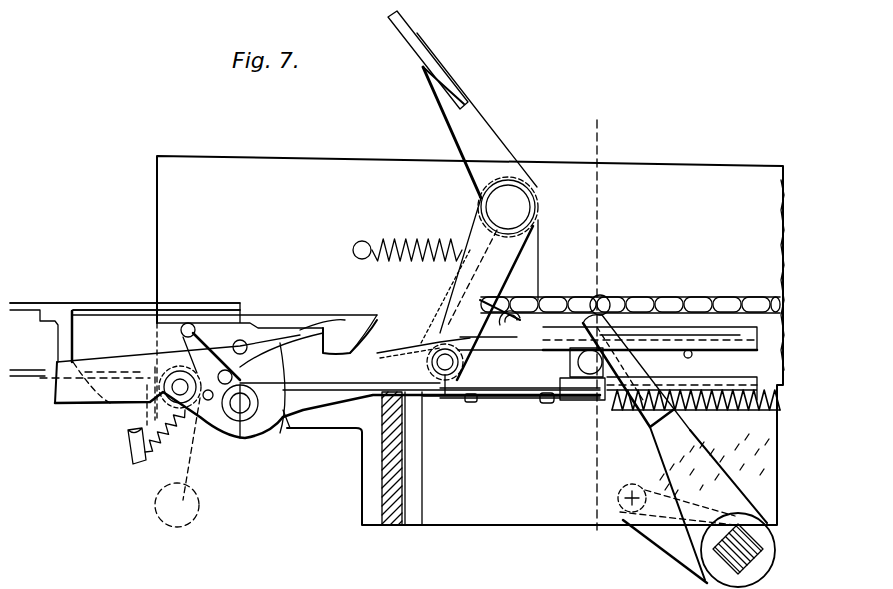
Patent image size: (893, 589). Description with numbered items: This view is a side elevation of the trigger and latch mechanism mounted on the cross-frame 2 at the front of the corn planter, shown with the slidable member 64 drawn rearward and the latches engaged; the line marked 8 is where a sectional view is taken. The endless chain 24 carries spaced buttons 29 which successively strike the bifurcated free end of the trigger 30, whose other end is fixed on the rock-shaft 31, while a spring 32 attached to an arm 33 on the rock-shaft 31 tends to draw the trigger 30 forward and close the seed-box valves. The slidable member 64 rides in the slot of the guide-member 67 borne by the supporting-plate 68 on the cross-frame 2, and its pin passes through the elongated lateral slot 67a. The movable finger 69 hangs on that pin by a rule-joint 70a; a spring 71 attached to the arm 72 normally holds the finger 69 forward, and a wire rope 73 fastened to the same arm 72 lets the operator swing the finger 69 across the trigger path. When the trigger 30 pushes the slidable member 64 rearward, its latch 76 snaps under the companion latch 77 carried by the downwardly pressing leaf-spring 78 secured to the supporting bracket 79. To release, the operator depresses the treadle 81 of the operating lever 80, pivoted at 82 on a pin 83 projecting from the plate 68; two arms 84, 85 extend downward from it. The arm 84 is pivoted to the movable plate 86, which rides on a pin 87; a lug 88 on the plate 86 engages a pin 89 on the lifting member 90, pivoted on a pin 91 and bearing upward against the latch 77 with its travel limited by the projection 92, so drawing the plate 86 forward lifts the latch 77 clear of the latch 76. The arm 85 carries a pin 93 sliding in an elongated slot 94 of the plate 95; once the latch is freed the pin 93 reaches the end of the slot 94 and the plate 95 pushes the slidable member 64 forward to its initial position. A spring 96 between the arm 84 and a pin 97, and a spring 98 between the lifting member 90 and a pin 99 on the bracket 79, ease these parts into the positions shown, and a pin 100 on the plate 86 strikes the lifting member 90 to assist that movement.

The cross-frame 2 is at (387, 525).
The section line 8— 8 is at (591, 334).
The endless chain 24 is at (760, 294).
The buttons 29 is at (602, 295).
The trigger 30 is at (673, 330).
The rock-shaft 31 is at (724, 562).
The spring 32 is at (696, 442).
The arm 33 is at (672, 535).
The slidable member 64 is at (686, 378).
The guide-member 67 is at (688, 352).
The elongated lateral slot 67a is at (677, 352).
The supporting-plate 68 is at (686, 178).
The movable finger 69 is at (577, 392).
The rule-joint 70a is at (578, 362).
The spring 71 is at (615, 425).
The arm 72 is at (553, 405).
The wire rope 73 is at (337, 400).
The latch 76 is at (281, 433).
The companion latch 77 is at (332, 325).
The leaf-spring 78 is at (110, 303).
The supporting bracket 79 is at (57, 345).
The operating lever 80 is at (470, 143).
The treadle 81 is at (420, 46).
The pivot 82 is at (535, 192).
The pin 83 is at (512, 192).
The arm 84 is at (530, 246).
The arm 85 is at (465, 280).
The movable plate 86 is at (58, 405).
The pin 87 is at (165, 408).
The lug 88 is at (177, 505).
The pin 89 is at (205, 400).
The lifting member 90 is at (210, 345).
The pin 91 is at (240, 425).
The projection 92 is at (255, 312).
The pin 93 is at (448, 380).
The elongated slot 94 is at (482, 396).
The plate 95 is at (501, 334).
The spring 96 is at (425, 243).
The pin 97 is at (358, 241).
The spring 98 is at (170, 440).
The pin 99 is at (135, 466).
The pin 100 is at (247, 347).